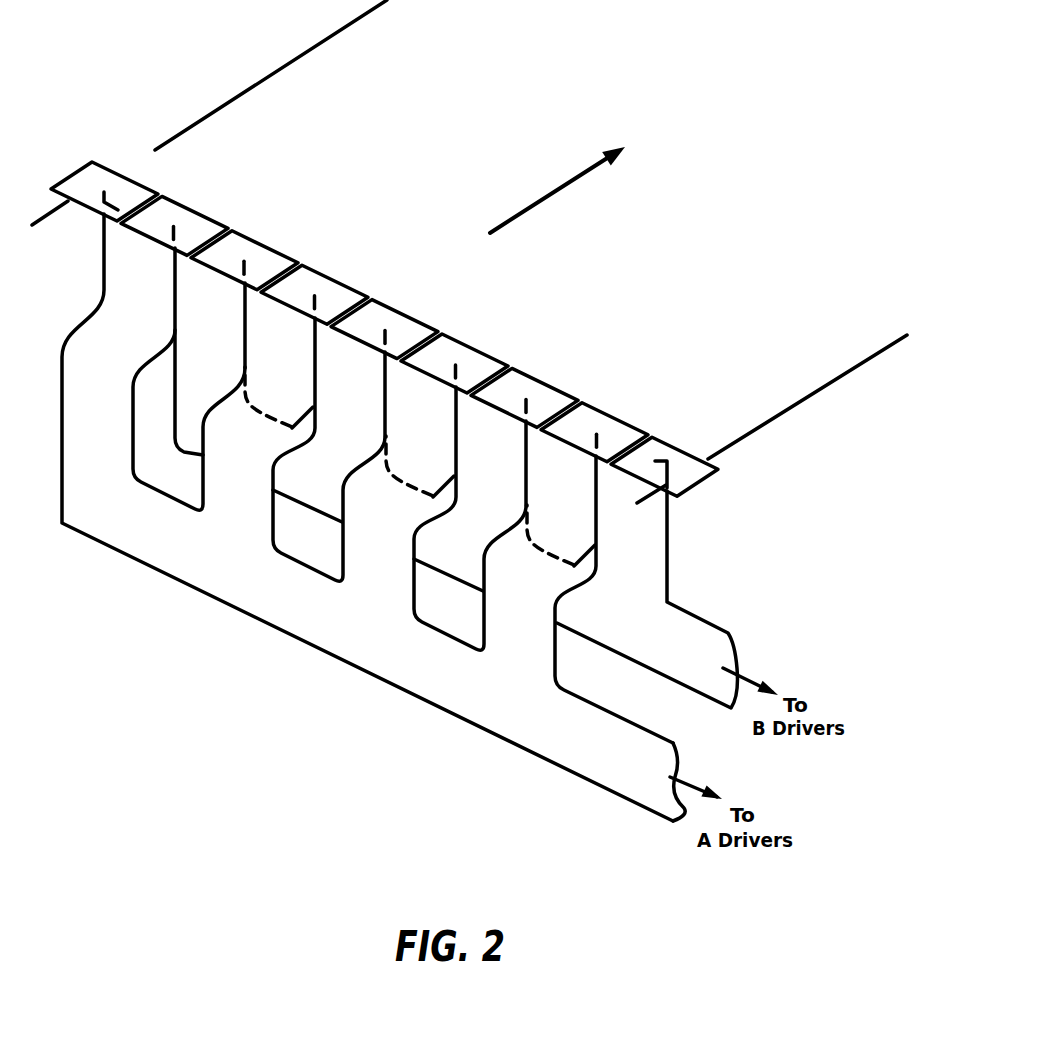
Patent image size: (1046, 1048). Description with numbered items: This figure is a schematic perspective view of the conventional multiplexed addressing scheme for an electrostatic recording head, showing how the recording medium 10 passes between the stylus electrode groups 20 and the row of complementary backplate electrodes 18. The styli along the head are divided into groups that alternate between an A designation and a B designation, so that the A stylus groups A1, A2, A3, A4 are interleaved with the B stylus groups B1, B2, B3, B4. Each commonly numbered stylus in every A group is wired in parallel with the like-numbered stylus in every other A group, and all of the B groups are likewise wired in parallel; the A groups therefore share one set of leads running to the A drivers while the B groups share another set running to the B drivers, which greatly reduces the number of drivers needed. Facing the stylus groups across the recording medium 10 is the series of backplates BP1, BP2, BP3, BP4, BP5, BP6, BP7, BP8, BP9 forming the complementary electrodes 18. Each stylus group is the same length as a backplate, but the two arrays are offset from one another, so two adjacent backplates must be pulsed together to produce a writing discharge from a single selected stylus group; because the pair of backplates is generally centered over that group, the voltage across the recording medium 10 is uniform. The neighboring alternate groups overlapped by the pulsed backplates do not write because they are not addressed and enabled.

The recording medium 10 is at (320, 90).
The complementary electrodes 18 is at (302, 278).
The stylus electrodes 20 is at (530, 625).
The backplate electrode BP1 is at (104, 184).
The backplate electrode BP2 is at (174, 218).
The backplate electrode BP3 is at (244, 253).
The backplate electrode BP4 is at (314, 287).
The backplate electrode BP5 is at (384, 322).
The backplate electrode BP6 is at (454, 356).
The backplate electrode BP7 is at (524, 390).
The backplate electrode BP8 is at (594, 425).
The backplate electrode BP9 is at (664, 459).
The A stylus group A1 is at (373, 517).
The A stylus group A2 is at (279, 355).
The A stylus group A3 is at (419, 424).
The A stylus group A4 is at (560, 493).
The B stylus group B1 is at (189, 379).
The B stylus group B2 is at (329, 449).
The B stylus group B3 is at (470, 518).
The B stylus group B4 is at (646, 599).